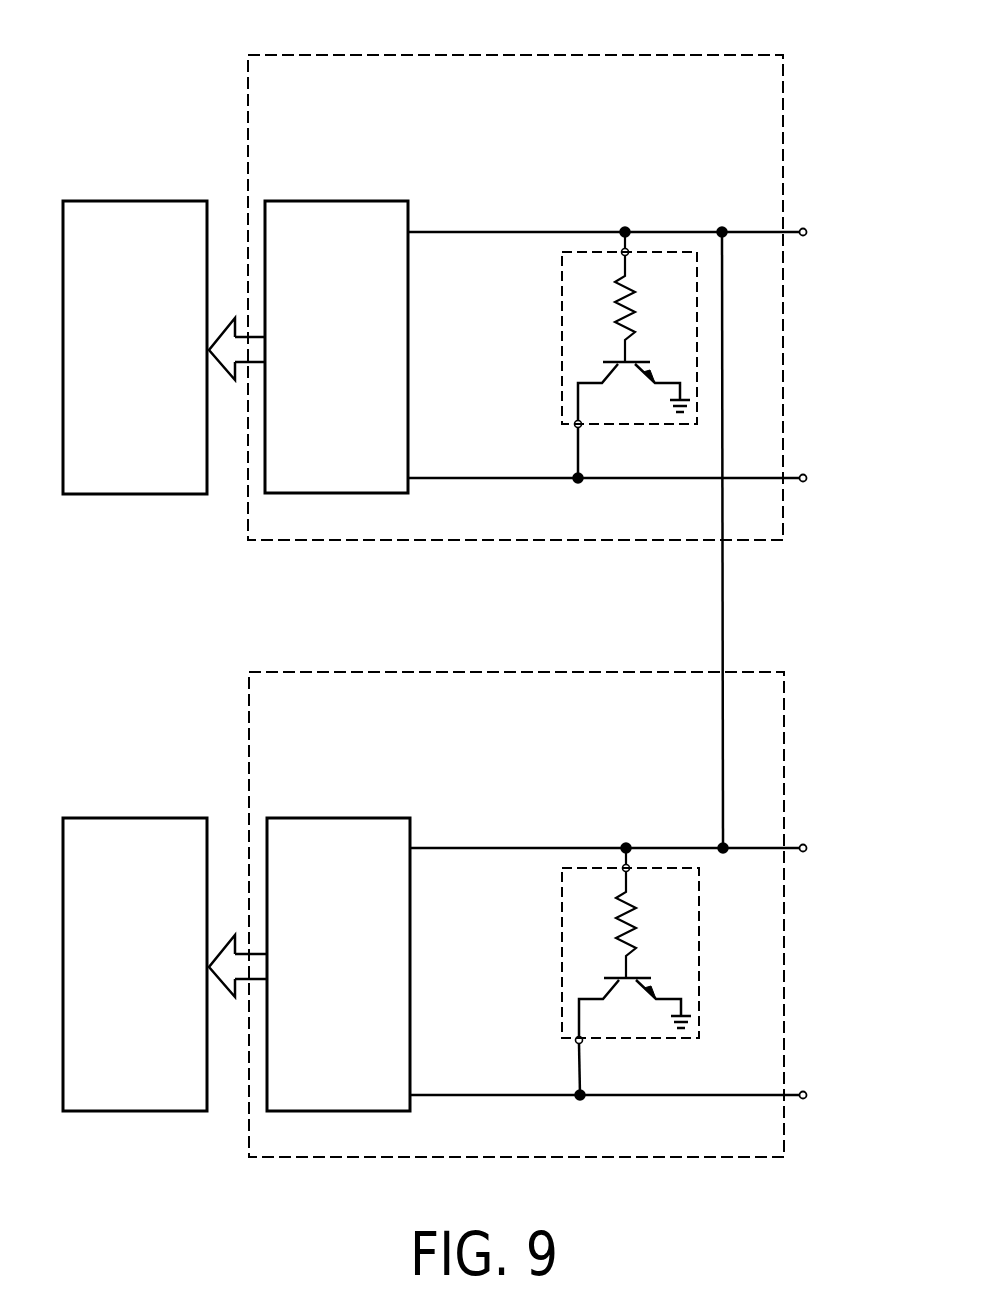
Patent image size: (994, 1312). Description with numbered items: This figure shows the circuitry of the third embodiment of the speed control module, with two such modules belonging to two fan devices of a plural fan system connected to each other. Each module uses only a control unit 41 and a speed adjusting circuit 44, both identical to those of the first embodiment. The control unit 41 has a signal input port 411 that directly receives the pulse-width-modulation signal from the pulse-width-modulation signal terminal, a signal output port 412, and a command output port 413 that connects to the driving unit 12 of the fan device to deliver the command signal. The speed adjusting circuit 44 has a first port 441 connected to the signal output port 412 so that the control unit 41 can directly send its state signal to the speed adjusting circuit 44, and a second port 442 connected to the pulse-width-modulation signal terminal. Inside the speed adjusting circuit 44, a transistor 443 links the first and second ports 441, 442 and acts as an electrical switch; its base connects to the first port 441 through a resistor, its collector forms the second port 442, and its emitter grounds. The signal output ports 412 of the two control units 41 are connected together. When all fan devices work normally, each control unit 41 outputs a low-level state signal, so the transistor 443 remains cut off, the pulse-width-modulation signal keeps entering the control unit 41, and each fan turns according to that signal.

The driving unit 12 is at (166, 200).
The control unit 41 is at (368, 207).
The signal input port 411 is at (410, 478).
The signal output port 412 is at (410, 232).
The command output port 413 is at (264, 344).
The speed adjusting circuit 44 is at (686, 252).
The first port 441 is at (628, 250).
The second port 442 is at (582, 426).
The transistor 443 is at (640, 361).